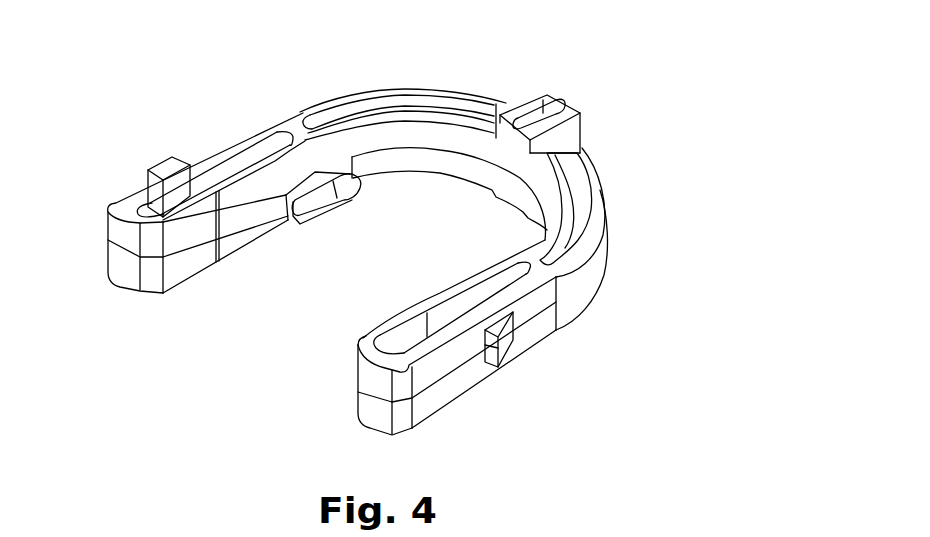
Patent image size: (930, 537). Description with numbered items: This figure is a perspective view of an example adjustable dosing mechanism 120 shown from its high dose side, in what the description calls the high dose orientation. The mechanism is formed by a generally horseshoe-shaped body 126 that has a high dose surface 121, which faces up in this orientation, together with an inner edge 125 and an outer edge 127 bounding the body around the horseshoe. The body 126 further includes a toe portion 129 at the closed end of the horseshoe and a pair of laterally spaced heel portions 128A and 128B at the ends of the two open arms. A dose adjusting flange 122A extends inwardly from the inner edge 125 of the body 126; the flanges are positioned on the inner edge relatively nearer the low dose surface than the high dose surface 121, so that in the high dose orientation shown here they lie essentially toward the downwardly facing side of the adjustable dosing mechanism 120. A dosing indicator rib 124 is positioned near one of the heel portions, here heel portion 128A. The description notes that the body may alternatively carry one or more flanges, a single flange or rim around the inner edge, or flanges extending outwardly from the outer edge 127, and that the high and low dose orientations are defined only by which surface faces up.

The adjustable dosing mechanism 120 is at (478, 43).
The high dose surface 121 is at (587, 152).
The dose adjusting flange 122A is at (322, 187).
The dosing indicator rib 124 is at (168, 166).
The inner edge 125 is at (207, 278).
The body 126 is at (603, 220).
The outer edge 127 is at (440, 388).
The heel portion 128A is at (106, 193).
The heel portion 128B is at (411, 446).
The toe portion 129 is at (568, 96).